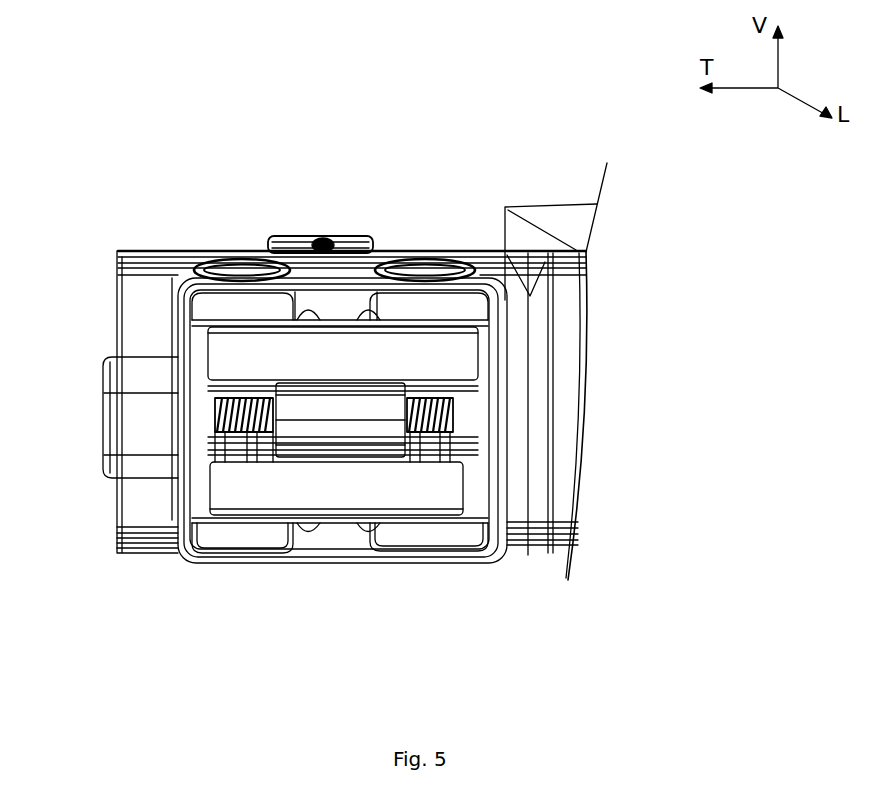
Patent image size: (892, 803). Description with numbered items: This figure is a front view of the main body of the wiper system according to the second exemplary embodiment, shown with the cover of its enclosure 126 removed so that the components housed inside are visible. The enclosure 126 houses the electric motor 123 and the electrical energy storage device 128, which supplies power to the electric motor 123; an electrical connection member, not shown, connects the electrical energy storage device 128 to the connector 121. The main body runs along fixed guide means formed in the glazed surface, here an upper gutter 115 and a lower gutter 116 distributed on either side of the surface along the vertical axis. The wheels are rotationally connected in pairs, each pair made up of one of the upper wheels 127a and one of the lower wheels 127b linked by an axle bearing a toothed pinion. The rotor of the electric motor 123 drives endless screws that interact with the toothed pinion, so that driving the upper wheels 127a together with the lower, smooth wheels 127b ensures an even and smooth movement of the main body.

The upper gutter 115 is at (505, 252).
The lower gutter 116 is at (540, 547).
The connector 121 is at (143, 366).
The electric motor 123 is at (307, 427).
The enclosure 126 is at (450, 418).
The upper wheels 127a is at (250, 248).
The lower wheels 127b is at (240, 563).
The electrical energy storage device 128 is at (352, 316).